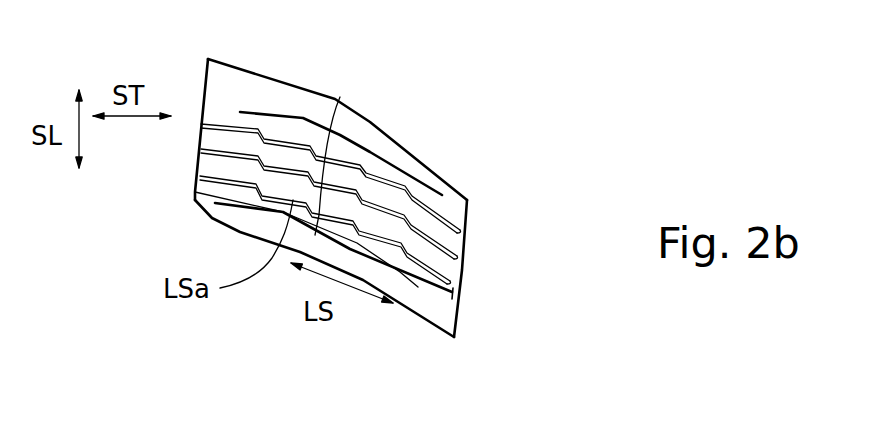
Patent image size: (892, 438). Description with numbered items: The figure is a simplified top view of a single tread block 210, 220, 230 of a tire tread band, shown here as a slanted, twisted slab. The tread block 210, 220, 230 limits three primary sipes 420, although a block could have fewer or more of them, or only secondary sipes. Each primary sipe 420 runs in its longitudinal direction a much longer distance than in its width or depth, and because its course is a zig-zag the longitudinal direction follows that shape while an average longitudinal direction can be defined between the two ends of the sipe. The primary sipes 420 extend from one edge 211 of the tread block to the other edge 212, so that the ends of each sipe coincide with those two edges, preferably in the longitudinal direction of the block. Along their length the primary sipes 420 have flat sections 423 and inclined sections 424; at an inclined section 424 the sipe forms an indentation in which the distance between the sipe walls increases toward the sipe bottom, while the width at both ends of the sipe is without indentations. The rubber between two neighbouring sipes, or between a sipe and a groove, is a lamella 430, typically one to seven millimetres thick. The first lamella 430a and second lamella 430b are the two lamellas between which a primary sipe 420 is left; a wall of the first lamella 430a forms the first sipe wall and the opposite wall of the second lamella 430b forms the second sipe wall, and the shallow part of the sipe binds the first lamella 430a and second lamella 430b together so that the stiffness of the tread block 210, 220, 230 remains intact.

The tread block 210 is at (471, 191).
The tread block 220 is at (471, 191).
The tread block 230 is at (472, 106).
The edge of the tread block 211 is at (197, 75).
The other edge of the tread block 212 is at (476, 273).
The primary sipe 420 is at (430, 263).
The flat section 423 is at (217, 123).
The inclined section 424 is at (283, 170).
The lamella 430 is at (338, 240).
The first lamella 430a is at (199, 133).
The second lamella 430b is at (197, 168).